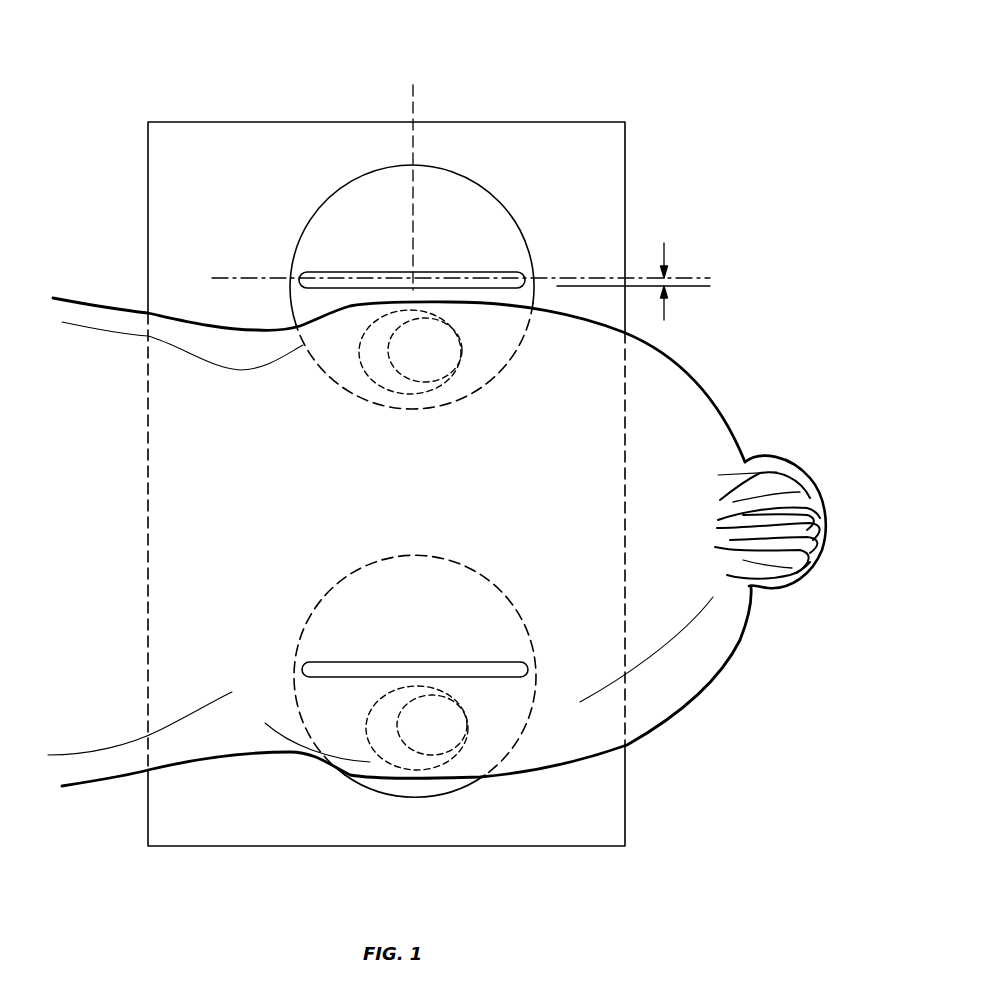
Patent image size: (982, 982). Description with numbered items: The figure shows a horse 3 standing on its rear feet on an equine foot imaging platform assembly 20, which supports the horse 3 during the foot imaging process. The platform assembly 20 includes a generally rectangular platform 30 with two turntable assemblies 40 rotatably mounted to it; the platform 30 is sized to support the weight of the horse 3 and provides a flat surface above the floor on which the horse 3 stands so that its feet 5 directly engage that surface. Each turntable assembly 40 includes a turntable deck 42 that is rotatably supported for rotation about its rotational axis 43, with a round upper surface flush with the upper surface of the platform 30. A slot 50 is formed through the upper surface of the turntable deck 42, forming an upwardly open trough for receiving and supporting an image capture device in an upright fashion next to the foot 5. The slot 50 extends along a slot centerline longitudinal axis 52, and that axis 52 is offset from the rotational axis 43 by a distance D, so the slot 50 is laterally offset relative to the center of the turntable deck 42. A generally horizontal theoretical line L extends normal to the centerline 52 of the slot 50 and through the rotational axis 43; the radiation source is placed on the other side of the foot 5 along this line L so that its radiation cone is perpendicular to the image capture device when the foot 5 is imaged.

The imaging platform assembly 20 is at (250, 92).
The platform 30 is at (168, 186).
The horse 3 is at (690, 368).
The foot 5 is at (363, 337).
The turntable assembly 40 is at (305, 190).
The turntable deck 42 is at (470, 213).
The rotational axis 43 is at (411, 280).
The slot 50 is at (497, 270).
The slot centerline longitudinal axis 52 is at (555, 277).
The offset distance D is at (672, 277).
The theoretical line L is at (413, 88).